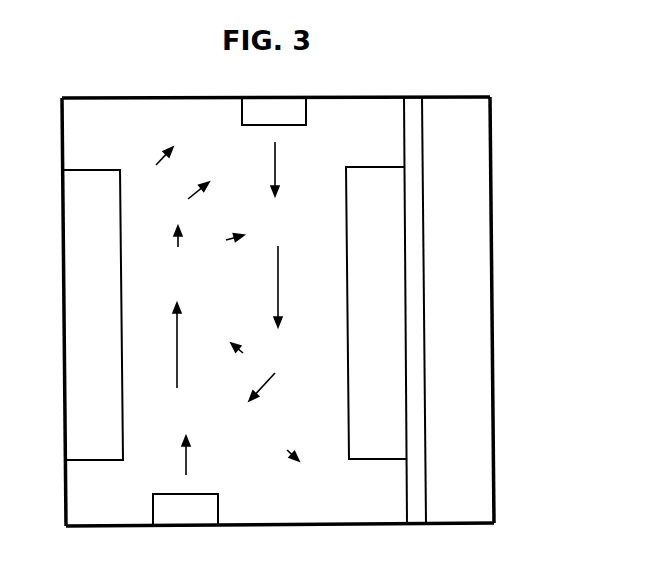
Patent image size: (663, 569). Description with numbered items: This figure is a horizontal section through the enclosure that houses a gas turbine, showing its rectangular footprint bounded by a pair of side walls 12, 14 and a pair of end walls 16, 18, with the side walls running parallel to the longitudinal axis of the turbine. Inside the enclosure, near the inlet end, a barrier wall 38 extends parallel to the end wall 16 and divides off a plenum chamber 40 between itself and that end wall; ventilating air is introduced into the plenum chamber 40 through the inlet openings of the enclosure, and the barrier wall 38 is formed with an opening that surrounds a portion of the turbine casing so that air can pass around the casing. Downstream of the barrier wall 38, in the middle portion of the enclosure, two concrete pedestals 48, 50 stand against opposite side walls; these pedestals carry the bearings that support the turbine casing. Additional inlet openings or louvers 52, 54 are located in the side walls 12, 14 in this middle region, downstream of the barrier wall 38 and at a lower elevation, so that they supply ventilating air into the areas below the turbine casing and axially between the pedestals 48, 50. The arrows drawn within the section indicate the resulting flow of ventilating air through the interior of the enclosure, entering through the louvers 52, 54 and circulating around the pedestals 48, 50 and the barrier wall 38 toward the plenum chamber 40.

The side wall 12 is at (320, 528).
The side wall 14 is at (114, 96).
The end wall 16 is at (490, 297).
The end wall 18 is at (64, 489).
The barrier wall 38 is at (417, 178).
The plenum chamber 40 is at (483, 412).
The concrete pedestal 48 is at (122, 258).
The concrete pedestal 50 is at (357, 330).
The inlet opening or louver 52 is at (288, 113).
The inlet opening or louver 54 is at (220, 510).